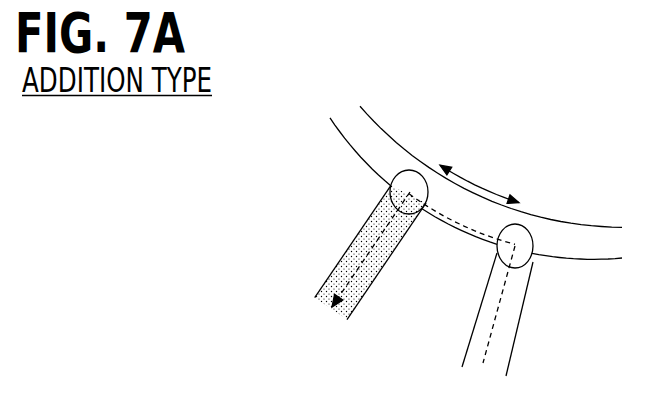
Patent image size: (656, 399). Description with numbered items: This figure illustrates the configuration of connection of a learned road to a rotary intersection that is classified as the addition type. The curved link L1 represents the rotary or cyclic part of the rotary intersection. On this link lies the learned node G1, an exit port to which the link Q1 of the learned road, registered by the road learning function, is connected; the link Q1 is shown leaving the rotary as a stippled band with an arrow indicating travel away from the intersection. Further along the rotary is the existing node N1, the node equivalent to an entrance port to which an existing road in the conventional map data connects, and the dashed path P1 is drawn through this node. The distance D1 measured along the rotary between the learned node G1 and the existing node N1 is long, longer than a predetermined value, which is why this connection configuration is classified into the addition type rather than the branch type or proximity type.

The link of the rotary part L1 is at (381, 137).
The learned node G1 is at (416, 182).
The distance D1 is at (479, 176).
The link of the learned road Q1 is at (353, 244).
The exit path P1 is at (490, 339).
The existing node N1 is at (530, 266).